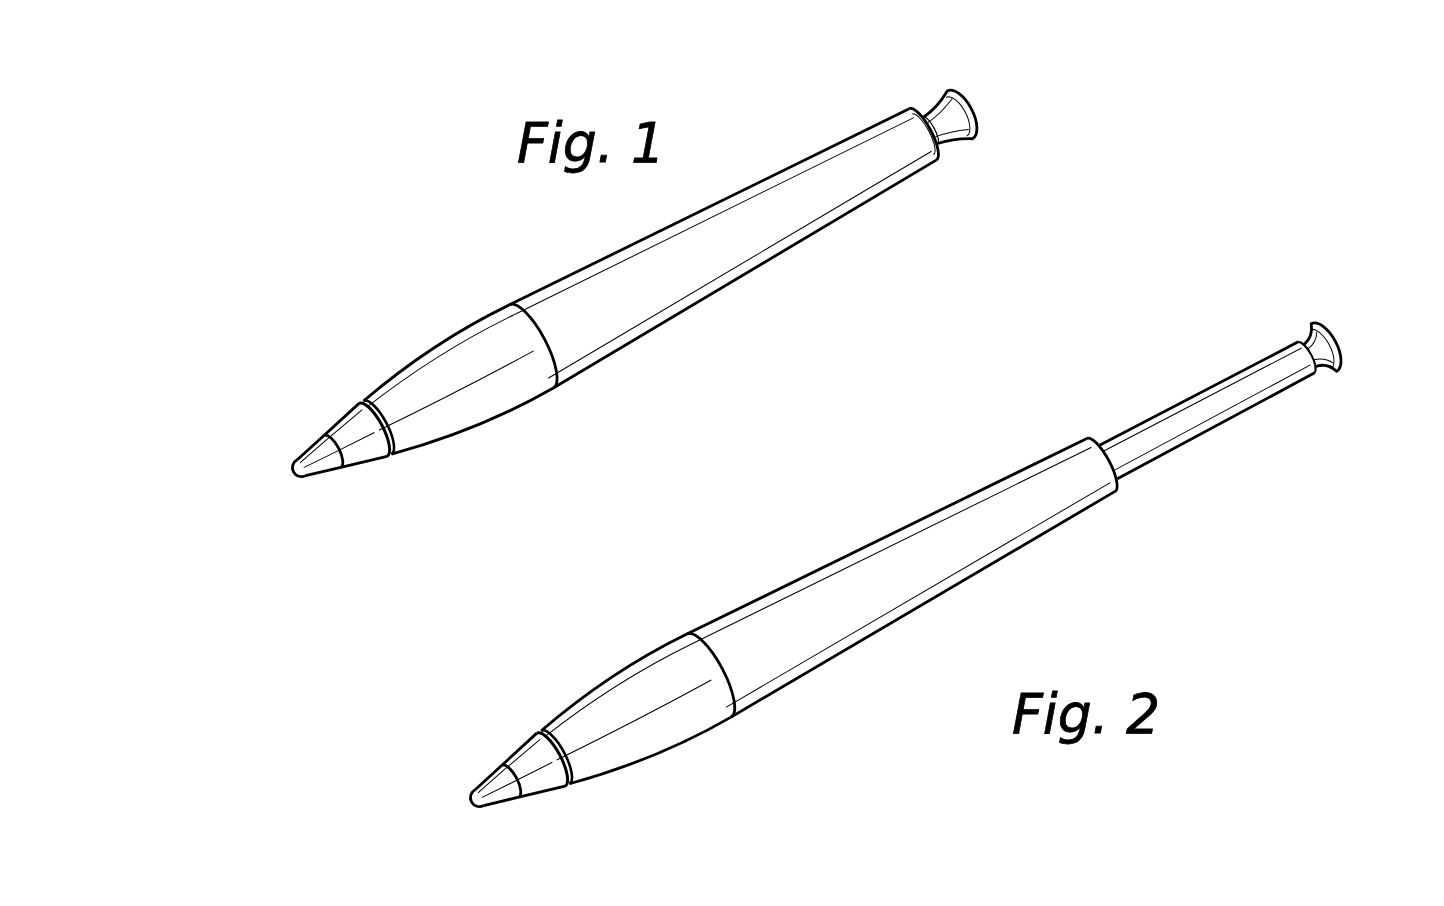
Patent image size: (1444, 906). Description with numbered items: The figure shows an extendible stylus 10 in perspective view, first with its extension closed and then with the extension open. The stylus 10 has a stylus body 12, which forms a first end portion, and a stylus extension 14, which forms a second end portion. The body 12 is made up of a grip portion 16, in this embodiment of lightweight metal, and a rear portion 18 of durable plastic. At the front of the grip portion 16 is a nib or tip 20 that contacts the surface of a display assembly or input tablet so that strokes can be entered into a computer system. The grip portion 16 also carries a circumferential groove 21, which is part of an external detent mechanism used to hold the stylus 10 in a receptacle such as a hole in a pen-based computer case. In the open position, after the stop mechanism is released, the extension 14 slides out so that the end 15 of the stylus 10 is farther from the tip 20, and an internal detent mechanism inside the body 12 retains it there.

In FIG. 1, the extendible stylus 10 is at (331, 239).
In FIG. 2, the extendible stylus 10 is at (546, 629).
In FIG. 1, the stylus body 12 is at (722, 329).
In FIG. 2, the stylus body 12 is at (1034, 583).
In FIG. 1, the stylus extension 14 is at (980, 173).
In FIG. 2, the stylus extension 14 is at (1230, 410).
In FIG. 1, the end 15 is at (977, 115).
In FIG. 2, the end 15 is at (1340, 345).
In FIG. 1, the grip portion 16 is at (438, 433).
In FIG. 2, the grip portion 16 is at (638, 713).
In FIG. 1, the rear portion 18 is at (805, 234).
In FIG. 1, the tip 20 is at (304, 463).
In FIG. 2, the tip 20 is at (481, 793).
In FIG. 1, the circumferential groove 21 is at (363, 405).
In FIG. 2, the circumferential groove 21 is at (537, 767).